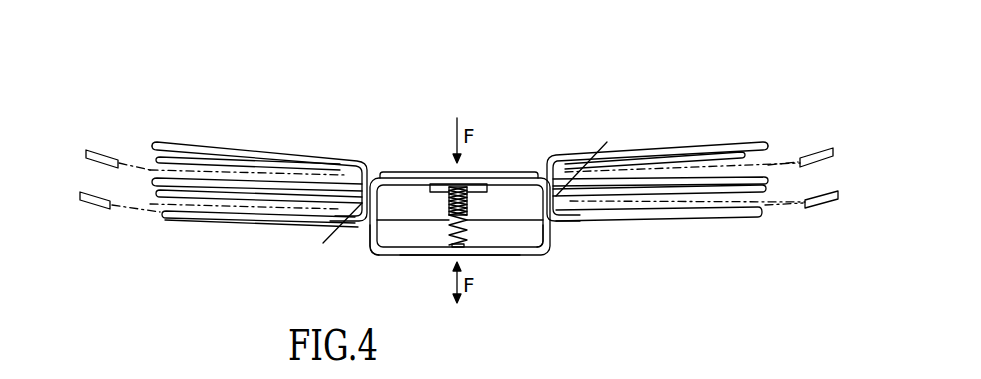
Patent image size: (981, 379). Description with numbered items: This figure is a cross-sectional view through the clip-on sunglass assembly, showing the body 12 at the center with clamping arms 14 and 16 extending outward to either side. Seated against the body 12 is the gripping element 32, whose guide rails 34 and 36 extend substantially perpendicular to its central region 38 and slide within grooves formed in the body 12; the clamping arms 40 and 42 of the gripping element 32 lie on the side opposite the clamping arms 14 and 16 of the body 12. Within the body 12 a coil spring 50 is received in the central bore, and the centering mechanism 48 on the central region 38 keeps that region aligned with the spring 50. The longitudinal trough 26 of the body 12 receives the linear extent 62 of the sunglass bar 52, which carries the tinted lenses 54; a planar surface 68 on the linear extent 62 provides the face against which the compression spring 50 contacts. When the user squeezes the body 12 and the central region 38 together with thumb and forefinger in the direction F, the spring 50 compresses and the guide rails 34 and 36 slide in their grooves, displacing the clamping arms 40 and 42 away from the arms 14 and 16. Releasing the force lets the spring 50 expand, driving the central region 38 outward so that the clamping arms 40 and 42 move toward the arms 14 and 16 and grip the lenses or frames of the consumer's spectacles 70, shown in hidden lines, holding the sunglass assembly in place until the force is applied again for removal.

The body portion 12 is at (331, 208).
The clamping arm 14 is at (258, 188).
The clamping arm 16 is at (676, 186).
The longitudinal trough 26 is at (401, 177).
The gripping element 32 is at (550, 248).
The guide rail 34 is at (366, 232).
The guide rail 36 is at (556, 162).
The central region 38 is at (503, 256).
The clamping arm 40 is at (352, 157).
The clamping arm 42 is at (657, 152).
The centering mechanism 48 is at (468, 235).
The coil spring 50 is at (448, 207).
The sunglass bar 52 is at (238, 222).
The tinted lenses 54 is at (93, 205).
The linear extent 62 is at (424, 184).
The planar surface 68 is at (474, 188).
The spectacles 70 is at (800, 152).